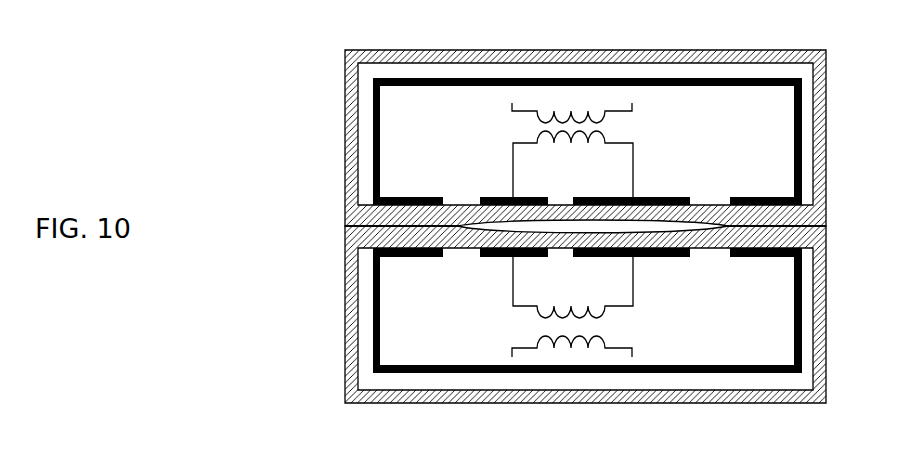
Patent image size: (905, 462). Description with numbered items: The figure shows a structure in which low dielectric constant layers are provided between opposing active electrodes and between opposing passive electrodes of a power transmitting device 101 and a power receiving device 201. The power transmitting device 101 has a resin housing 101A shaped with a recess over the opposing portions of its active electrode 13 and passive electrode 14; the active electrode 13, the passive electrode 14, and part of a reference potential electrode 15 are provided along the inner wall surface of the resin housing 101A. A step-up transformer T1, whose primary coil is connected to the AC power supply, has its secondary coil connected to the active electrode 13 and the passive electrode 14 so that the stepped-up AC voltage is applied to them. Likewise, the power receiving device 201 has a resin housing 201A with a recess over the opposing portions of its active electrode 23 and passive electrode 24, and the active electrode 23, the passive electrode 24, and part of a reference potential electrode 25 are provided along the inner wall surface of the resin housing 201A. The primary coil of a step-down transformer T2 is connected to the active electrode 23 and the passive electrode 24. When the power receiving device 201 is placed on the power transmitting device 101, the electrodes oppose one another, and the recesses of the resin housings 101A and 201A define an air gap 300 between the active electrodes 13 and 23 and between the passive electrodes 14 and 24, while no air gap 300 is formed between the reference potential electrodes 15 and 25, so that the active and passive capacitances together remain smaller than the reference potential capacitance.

The power receiving device 201 is at (530, 137).
The resin housing 201A is at (345, 85).
The power transmitting device 101 is at (539, 331).
The resin housing 101A is at (345, 403).
The air gap 300 is at (457, 226).
The reference potential electrode 25 is at (397, 78).
The reference potential electrode 15 is at (372, 343).
The active electrode 23 is at (488, 197).
The passive electrode 24 is at (680, 197).
The active electrode 13 is at (480, 257).
The passive electrode 14 is at (685, 257).
The step-up transformer T1 is at (506, 347).
The step-down transformer T2 is at (506, 115).